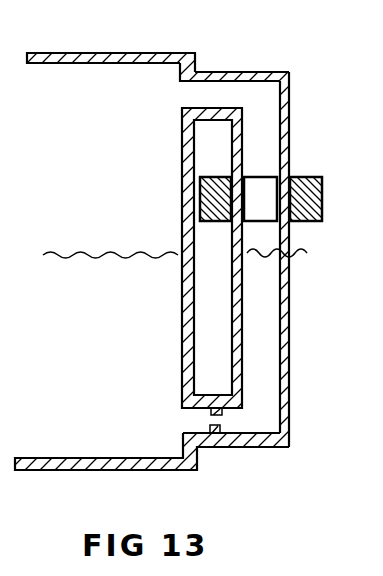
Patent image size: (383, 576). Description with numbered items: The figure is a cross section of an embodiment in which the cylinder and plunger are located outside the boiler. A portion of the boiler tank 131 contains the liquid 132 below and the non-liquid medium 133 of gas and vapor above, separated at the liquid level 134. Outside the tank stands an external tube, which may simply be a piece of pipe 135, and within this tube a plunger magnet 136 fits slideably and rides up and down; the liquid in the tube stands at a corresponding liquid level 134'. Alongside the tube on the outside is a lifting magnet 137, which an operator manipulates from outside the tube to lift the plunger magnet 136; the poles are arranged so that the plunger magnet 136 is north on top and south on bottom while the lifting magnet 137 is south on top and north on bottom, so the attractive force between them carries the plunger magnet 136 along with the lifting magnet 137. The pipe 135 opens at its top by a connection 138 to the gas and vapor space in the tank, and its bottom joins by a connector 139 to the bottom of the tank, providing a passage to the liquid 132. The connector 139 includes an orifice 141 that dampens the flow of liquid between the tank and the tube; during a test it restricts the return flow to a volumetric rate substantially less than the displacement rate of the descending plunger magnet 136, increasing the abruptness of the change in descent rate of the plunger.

The portion of the boiler tank 131 is at (125, 52).
The liquid 132 is at (103, 350).
The non-liquid medium 133 is at (83, 146).
The liquid level 134 is at (110, 235).
The liquid level 134' is at (309, 259).
The pipe 135 is at (290, 110).
The plunger magnet 136 is at (265, 180).
The lifting magnet 137 is at (322, 177).
The connection 138 is at (243, 70).
The connector 139 is at (241, 448).
The orifice 141 is at (233, 420).